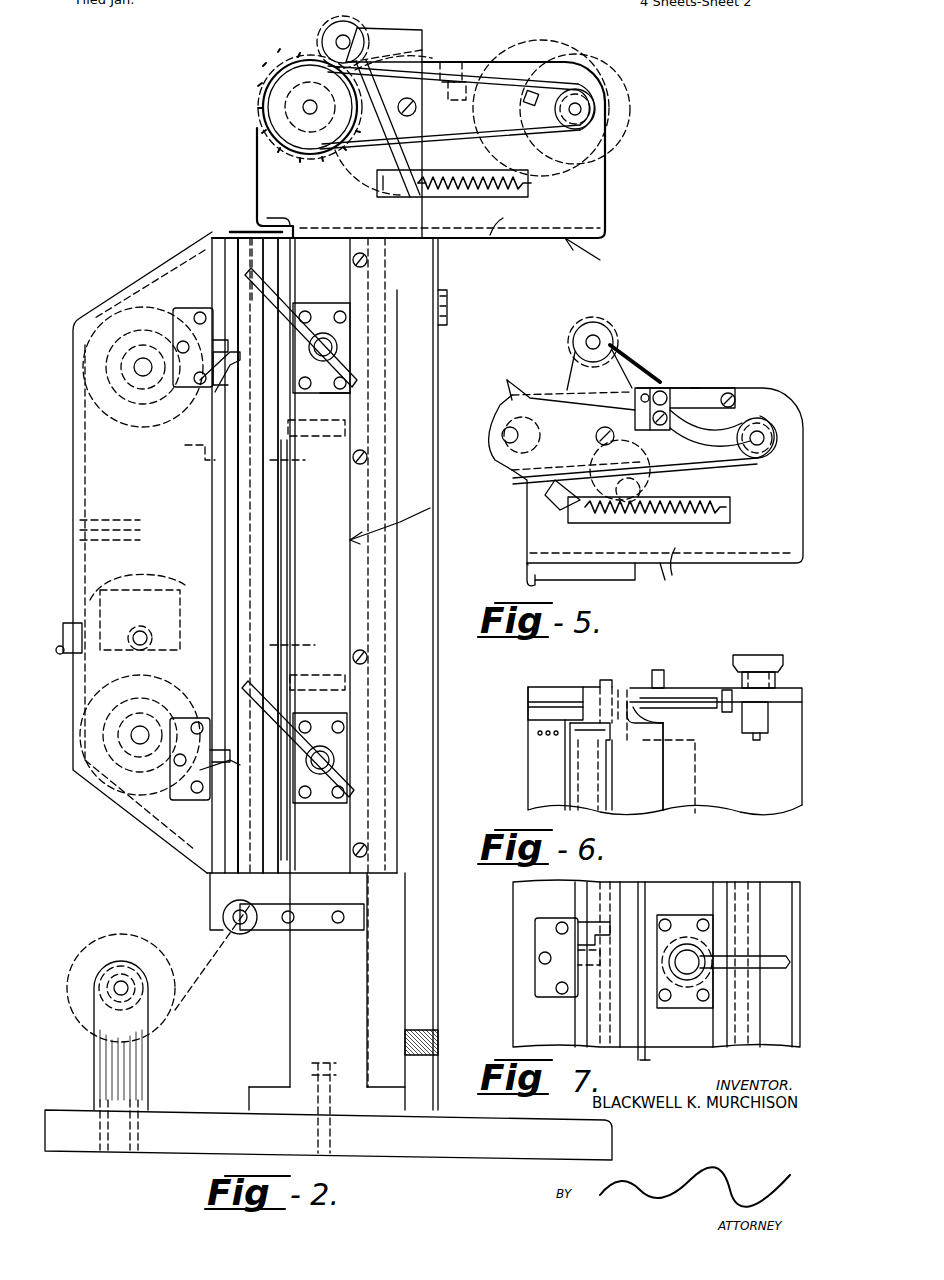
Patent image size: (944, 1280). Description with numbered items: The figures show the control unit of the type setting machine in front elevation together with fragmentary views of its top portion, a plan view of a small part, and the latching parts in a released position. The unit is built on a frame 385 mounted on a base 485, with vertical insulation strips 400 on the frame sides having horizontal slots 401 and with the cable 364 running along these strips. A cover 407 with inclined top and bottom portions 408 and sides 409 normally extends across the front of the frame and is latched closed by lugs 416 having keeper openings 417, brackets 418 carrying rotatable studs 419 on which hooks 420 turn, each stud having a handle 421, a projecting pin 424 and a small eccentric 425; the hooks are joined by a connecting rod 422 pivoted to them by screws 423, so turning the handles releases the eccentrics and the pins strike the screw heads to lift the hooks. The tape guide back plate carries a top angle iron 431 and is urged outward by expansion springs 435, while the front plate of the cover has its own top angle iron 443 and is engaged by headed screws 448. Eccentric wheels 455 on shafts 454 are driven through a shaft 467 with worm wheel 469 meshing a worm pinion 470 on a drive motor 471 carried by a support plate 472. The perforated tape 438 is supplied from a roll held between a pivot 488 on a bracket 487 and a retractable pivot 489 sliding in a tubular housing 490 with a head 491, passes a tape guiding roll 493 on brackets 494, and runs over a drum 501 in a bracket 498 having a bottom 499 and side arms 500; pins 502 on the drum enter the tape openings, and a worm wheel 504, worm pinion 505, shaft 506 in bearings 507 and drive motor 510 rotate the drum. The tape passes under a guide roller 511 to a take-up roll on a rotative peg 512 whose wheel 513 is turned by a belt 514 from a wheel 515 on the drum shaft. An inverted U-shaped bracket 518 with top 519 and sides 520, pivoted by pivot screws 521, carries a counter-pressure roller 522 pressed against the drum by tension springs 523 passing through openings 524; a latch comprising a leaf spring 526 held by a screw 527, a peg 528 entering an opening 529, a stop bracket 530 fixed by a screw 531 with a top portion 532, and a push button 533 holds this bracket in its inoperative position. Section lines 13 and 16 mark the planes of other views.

In FIG. 2, the cable 364 is at (420, 922).
In FIG. 2, the frame 385 is at (414, 526).
In FIG. 5, the frame 385 is at (530, 575).
In FIG. 7, the frame 385 is at (700, 1030).
In FIG. 2, the vertical insulation strips 400 is at (430, 262).
In FIG. 5, the vertical insulation strips 400 is at (600, 575).
In FIG. 2, the horizontal slots 401 is at (448, 298).
In FIG. 2, the cover 407 is at (105, 295).
In FIG. 2, the inclined top and bottom portions 408 is at (110, 816).
In FIG. 2, the sides 409 is at (78, 775).
In FIG. 7, the sides 409 is at (540, 895).
In FIG. 2, the lugs 416 is at (185, 300).
In FIG. 7, the lugs 416 is at (552, 940).
In FIG. 2, the keeper openings 417 is at (222, 368).
In FIG. 7, the keeper openings 417 is at (580, 958).
In FIG. 2, the brackets 418 is at (350, 385).
In FIG. 7, the brackets 418 is at (712, 912).
In FIG. 2, the studs 419 is at (337, 340).
In FIG. 7, the studs 419 is at (690, 960).
In FIG. 2, the hooks 420 is at (213, 355).
In FIG. 7, the hooks 420 is at (620, 905).
In FIG. 2, the handle 421 is at (285, 288).
In FIG. 7, the handle 421 is at (760, 1048).
In FIG. 2, the connecting rod 422 is at (288, 550).
In FIG. 7, the connecting rod 422 is at (648, 1050).
In FIG. 2, the screws 423 is at (300, 330).
In FIG. 7, the screws 423 is at (600, 960).
In FIG. 2, the projecting pins 424 is at (352, 383).
In FIG. 7, the projecting pins 424 is at (630, 1000).
In FIG. 2, the eccentrics 425 is at (345, 345).
In FIG. 7, the eccentrics 425 is at (680, 938).
In FIG. 2, the top angle iron 431 is at (283, 213).
In FIG. 2, the expansion springs 435 is at (316, 555).
In FIG. 2, the perforated tape 438 is at (620, 145).
In FIG. 2, the top angle iron 443 is at (232, 228).
In FIG. 2, the headed screws 448 is at (275, 468).
In FIG. 2, the shafts 454 is at (120, 355).
In FIG. 2, the eccentric wheels 455 is at (82, 364).
In FIG. 2, the shaft 467 is at (178, 456).
In FIG. 2, the worm wheel 469 is at (147, 647).
In FIG. 2, the worm pinion 470 is at (140, 620).
In FIG. 2, the drive motor 471 is at (78, 575).
In FIG. 2, the support plate 472 is at (68, 622).
In FIG. 2, the base 485 is at (475, 1155).
In FIG. 2, the stationary bracket 487 is at (150, 1068).
In FIG. 2, the pivot 488 is at (114, 995).
In FIG. 6, the retractable pivot 489 is at (762, 737).
In FIG. 6, the tubular housing 490 is at (777, 680).
In FIG. 6, the head 491 is at (762, 660).
In FIG. 2, the tape guiding roll 493 is at (240, 934).
In FIG. 2, the brackets 494 is at (310, 925).
In FIG. 2, the bracket 498 is at (590, 256).
In FIG. 5, the bracket 498 is at (660, 585).
In FIG. 2, the bottom 499 is at (590, 231).
In FIG. 5, the bottom 499 is at (795, 553).
In FIG. 6, the bottom 499 is at (777, 803).
In FIG. 2, the side arms 500 is at (590, 203).
In FIG. 5, the side arms 500 is at (785, 470).
In FIG. 6, the side arms 500 is at (803, 692).
In FIG. 2, the drum 501 is at (268, 106).
In FIG. 5, the drum 501 is at (510, 380).
In FIG. 6, the drum 501 is at (540, 757).
In FIG. 2, the pins 502 is at (310, 58).
In FIG. 5, the pins 502 is at (560, 390).
In FIG. 6, the pins 502 is at (536, 733).
In FIG. 2, the worm wheel 504 is at (262, 92).
In FIG. 5, the worm wheel 504 is at (505, 420).
In FIG. 2, the worm pinion 505 is at (300, 172).
In FIG. 2, the shaft 506 is at (371, 129).
In FIG. 6, the shaft 506 is at (548, 700).
In FIG. 2, the bearings 507 is at (273, 190).
In FIG. 5, the bearings 507 is at (650, 524).
In FIG. 2, the drive motor 510 is at (490, 237).
In FIG. 5, the drive motor 510 is at (692, 567).
In FIG. 6, the drive motor 510 is at (696, 781).
In FIG. 2, the guide roller 511 is at (430, 38).
In FIG. 5, the guide roller 511 is at (622, 350).
In FIG. 2, the rotative peg 512 is at (583, 109).
In FIG. 2, the wheel 513 is at (595, 96).
In FIG. 2, the belt 514 is at (576, 84).
In FIG. 2, the wheel 515 is at (278, 75).
In FIG. 5, the wheel 515 is at (512, 408).
In FIG. 2, the inverted U-shaped bracket 518 is at (398, 24).
In FIG. 5, the inverted U-shaped bracket 518 is at (668, 390).
In FIG. 6, the inverted U-shaped bracket 518 is at (668, 795).
In FIG. 2, the top 519 is at (370, 30).
In FIG. 5, the top 519 is at (700, 348).
In FIG. 6, the top 519 is at (648, 805).
In FIG. 2, the sides 520 is at (428, 48).
In FIG. 5, the sides 520 is at (642, 362).
In FIG. 6, the sides 520 is at (592, 684).
In FIG. 2, the pivot screws 521 is at (418, 109).
In FIG. 5, the pivot screws 521 is at (560, 500).
In FIG. 6, the pivot screws 521 is at (602, 682).
In FIG. 2, the counter-pressure roller 522 is at (330, 30).
In FIG. 5, the counter-pressure roller 522 is at (597, 324).
In FIG. 6, the counter-pressure roller 522 is at (580, 788).
In FIG. 2, the tension springs 523 is at (515, 190).
In FIG. 5, the tension springs 523 is at (692, 520).
In FIG. 2, the openings 524 is at (530, 190).
In FIG. 5, the openings 524 is at (732, 514).
In FIG. 2, the leaf spring 526 is at (530, 52).
In FIG. 5, the leaf spring 526 is at (705, 398).
In FIG. 6, the leaf spring 526 is at (660, 710).
In FIG. 2, the screw 527 is at (560, 60).
In FIG. 5, the screw 527 is at (737, 392).
In FIG. 6, the screw 527 is at (727, 715).
In FIG. 5, the peg 528 is at (650, 392).
In FIG. 6, the peg 528 is at (648, 686).
In FIG. 2, the opening 529 is at (446, 60).
In FIG. 5, the opening 529 is at (628, 463).
In FIG. 6, the opening 529 is at (638, 686).
In FIG. 5, the stop bracket 530 is at (690, 435).
In FIG. 5, the screw 531 is at (645, 472).
In FIG. 5, the top portion 532 is at (690, 410).
In FIG. 6, the top portion 532 is at (665, 740).
In FIG. 5, the push button 533 is at (712, 385).
In FIG. 6, the push button 533 is at (664, 675).
In FIG. 2, the section line 13 is at (215, 207).
In FIG. 2, the section line 16 is at (255, 230).